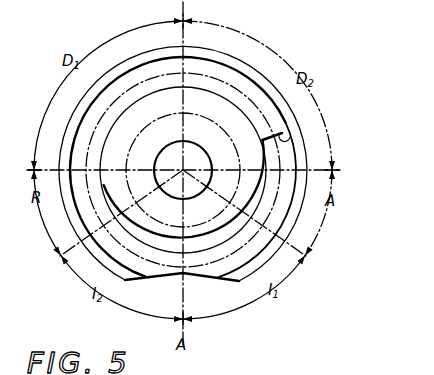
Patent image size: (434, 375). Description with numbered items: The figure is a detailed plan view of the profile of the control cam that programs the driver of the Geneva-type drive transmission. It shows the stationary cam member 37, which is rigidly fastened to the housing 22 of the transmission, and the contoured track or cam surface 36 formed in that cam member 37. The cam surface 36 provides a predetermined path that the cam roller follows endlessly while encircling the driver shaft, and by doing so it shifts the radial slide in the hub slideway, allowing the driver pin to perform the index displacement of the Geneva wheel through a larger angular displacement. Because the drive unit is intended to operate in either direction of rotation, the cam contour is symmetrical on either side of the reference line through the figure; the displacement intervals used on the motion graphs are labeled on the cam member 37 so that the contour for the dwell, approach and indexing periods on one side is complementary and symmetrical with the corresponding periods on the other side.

The housing 22 is at (294, 3).
The cam surface 36 is at (282, 133).
The cam member 37 is at (306, 147).